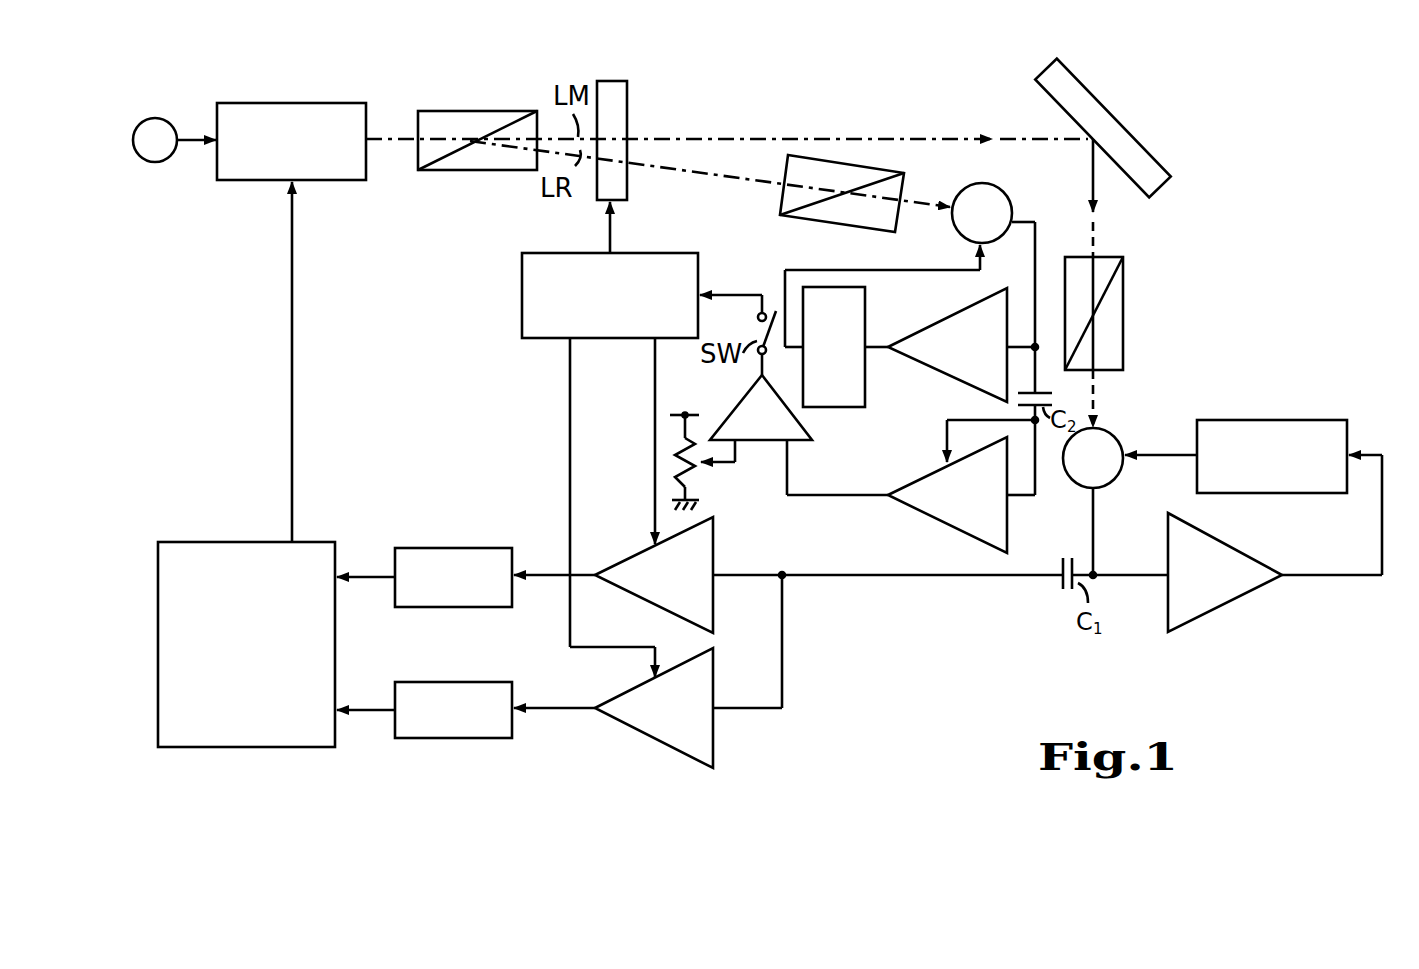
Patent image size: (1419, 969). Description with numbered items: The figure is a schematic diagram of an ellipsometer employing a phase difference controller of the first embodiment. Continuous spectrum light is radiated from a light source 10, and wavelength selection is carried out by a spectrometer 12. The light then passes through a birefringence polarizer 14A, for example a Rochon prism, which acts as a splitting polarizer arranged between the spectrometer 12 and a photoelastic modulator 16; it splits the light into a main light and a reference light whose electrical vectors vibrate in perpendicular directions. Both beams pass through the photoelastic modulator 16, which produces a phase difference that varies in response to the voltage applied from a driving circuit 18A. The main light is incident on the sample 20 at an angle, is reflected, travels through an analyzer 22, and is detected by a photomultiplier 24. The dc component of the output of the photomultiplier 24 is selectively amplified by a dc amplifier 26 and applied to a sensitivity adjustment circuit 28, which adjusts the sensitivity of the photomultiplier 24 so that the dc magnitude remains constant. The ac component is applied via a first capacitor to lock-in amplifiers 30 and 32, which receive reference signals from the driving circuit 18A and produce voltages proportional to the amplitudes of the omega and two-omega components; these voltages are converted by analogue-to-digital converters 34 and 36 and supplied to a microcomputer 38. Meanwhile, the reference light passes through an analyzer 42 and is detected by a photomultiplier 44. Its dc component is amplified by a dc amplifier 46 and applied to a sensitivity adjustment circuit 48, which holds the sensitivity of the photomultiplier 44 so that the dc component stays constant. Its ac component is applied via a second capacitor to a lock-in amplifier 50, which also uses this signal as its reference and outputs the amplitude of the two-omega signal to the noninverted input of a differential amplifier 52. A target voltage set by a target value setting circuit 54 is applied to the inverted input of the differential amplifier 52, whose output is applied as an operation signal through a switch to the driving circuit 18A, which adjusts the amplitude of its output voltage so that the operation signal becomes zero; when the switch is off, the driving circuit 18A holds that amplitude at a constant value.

The light source 10 is at (168, 118).
The spectrometer 12 is at (310, 102).
The birefringence polarizer 14A is at (468, 110).
The photoelastic modulator 16 is at (628, 108).
The driving circuit 18A is at (522, 318).
The sample 20 is at (1098, 98).
The analyzer 22 is at (1126, 302).
The photomultiplier 24 is at (1137, 428).
The dc amplifier 26 is at (1250, 590).
The sensitivity adjustment circuit 28 is at (1305, 495).
The lock-in amplifier 30 is at (716, 553).
The lock-in amplifier 32 is at (717, 740).
The analogue-to-digital converter 34 is at (478, 609).
The analogue-to-digital converter 36 is at (440, 682).
The microcomputer 38 is at (232, 540).
The analyzer 42 is at (905, 185).
The photomultiplier 44 is at (1008, 198).
The dc amplifier 46 is at (935, 366).
The sensitivity adjustment circuit 48 is at (867, 318).
The lock-in amplifier 50 is at (928, 475).
The differential amplifier 52 is at (805, 447).
The target value setting circuit 54 is at (672, 457).